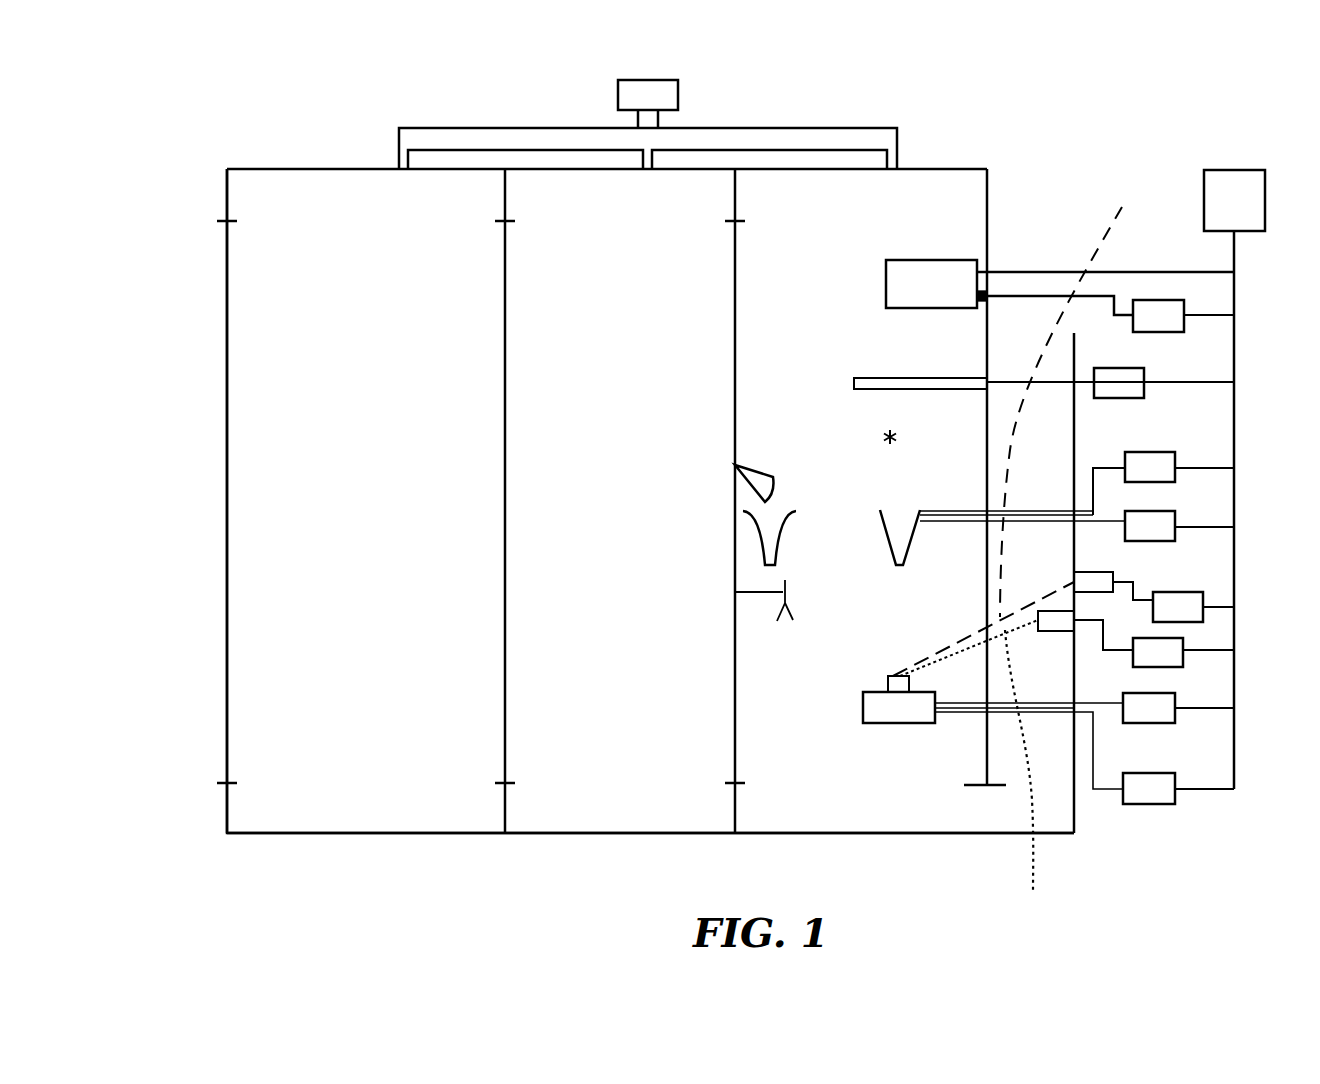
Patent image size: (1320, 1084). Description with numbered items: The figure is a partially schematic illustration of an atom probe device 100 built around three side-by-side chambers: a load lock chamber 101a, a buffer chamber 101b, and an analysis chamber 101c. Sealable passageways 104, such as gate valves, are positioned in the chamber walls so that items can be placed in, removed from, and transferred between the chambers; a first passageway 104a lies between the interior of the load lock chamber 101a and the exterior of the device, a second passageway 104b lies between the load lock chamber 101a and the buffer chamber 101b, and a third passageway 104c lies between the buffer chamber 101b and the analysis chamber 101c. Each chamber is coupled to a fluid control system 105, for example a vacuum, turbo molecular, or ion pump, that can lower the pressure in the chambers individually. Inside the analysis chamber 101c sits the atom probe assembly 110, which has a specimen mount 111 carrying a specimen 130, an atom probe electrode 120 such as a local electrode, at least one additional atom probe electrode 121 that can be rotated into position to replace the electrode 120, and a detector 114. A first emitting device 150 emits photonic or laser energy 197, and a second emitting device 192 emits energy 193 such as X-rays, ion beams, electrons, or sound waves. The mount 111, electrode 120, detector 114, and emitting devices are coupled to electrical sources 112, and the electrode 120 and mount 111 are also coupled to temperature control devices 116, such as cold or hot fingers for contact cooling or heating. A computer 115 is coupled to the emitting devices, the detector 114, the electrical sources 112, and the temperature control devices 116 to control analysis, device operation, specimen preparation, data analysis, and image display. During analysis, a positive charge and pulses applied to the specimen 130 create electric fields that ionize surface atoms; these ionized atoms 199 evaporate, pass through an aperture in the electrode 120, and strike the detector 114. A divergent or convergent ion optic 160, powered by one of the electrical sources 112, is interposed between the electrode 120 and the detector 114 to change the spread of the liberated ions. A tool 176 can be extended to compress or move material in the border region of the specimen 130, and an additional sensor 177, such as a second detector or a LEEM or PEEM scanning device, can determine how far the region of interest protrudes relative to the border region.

The atom probe device 100 is at (326, 130).
The load lock chamber 101a is at (283, 804).
The buffer chamber 101b is at (563, 804).
The analysis chamber 101c is at (843, 804).
The sealable passageways 104 is at (185, 374).
The first passageway 104a is at (227, 433).
The second passageway 104b is at (505, 433).
The third passageway 104c is at (735, 340).
The fluid control system 105 is at (678, 96).
The atom probe assembly 110 is at (955, 203).
The specimen mount 111 is at (863, 709).
The electrical sources 112 is at (1100, 380).
The detector 114 is at (886, 283).
The computer 115 is at (1228, 183).
The temperature control devices 116 is at (1160, 456).
The atom probe electrode 120 is at (880, 525).
The additional atom probe electrode 121 is at (780, 543).
The specimen 130 is at (888, 683).
The first emitting device 150 is at (1074, 582).
The ion optic 160 is at (866, 378).
The tool 176 is at (790, 600).
The additional sensor 177 is at (735, 470).
The second emitting device 192 is at (1066, 634).
The energy 193 is at (1026, 773).
The energy 197 is at (1071, 400).
The ionized atoms 199 is at (882, 440).